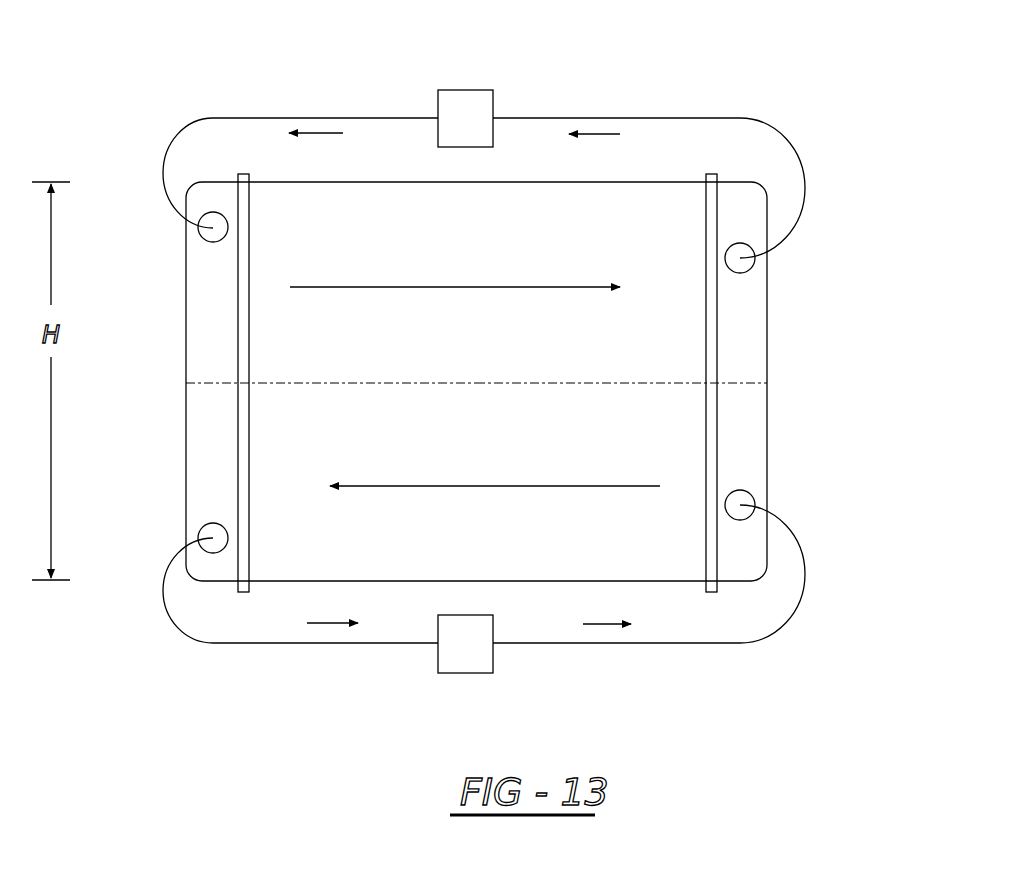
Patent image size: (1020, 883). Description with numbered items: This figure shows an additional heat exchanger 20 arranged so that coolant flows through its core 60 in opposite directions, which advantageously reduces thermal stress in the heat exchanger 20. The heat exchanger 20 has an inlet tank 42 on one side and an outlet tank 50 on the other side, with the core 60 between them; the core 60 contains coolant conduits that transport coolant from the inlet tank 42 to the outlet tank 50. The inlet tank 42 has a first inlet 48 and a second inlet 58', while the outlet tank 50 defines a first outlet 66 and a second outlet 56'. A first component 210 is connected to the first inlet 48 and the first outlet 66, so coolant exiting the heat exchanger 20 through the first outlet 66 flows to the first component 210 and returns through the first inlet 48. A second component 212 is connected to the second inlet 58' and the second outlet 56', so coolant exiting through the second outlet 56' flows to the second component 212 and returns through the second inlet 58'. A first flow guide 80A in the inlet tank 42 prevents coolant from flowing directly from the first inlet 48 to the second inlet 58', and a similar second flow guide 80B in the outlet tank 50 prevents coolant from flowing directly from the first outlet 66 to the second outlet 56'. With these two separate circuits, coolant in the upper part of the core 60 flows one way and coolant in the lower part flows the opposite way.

The heat exchanger 20 is at (737, 83).
The first component 210 is at (470, 90).
The second component 212 is at (472, 674).
The core 60 is at (307, 198).
The inlet tank 42 is at (197, 314).
The outlet tank 50 is at (742, 314).
The first inlet 48 is at (202, 239).
The first outlet 66 is at (752, 270).
The second inlet 58' is at (163, 520).
The second outlet 56' is at (791, 494).
The first flow guide 80A is at (203, 383).
The second flow guide 80B is at (740, 382).